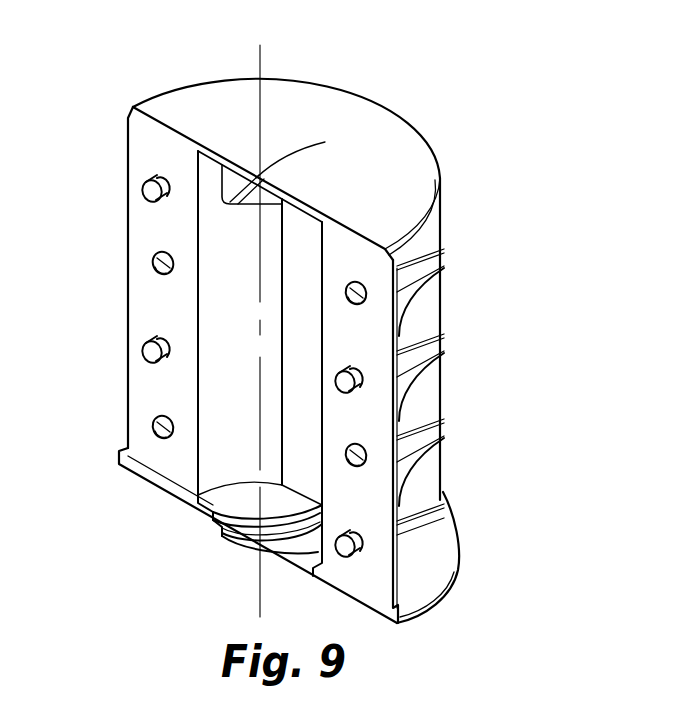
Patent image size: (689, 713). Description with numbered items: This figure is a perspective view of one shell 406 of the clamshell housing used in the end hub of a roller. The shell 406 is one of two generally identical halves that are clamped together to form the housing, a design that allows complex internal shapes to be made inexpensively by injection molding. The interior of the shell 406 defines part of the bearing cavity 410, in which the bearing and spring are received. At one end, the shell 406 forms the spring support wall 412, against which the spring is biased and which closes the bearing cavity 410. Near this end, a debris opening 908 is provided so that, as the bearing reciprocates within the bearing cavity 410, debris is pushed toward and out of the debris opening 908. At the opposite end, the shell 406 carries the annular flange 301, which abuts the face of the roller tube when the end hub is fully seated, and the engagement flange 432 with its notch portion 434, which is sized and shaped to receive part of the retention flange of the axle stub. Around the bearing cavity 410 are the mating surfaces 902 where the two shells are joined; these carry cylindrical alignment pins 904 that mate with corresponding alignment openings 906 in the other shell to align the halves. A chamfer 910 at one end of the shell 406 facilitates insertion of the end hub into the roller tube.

The annular flange 301 is at (443, 583).
The shell 406 is at (170, 97).
The bearing cavity 410 is at (245, 393).
The spring support wall 412 is at (224, 171).
The engagement flange 432 is at (283, 519).
The notch portion 434 is at (244, 510).
The mating surfaces 902 is at (363, 333).
The alignment pins 904 is at (150, 173).
The alignment openings 906 is at (152, 265).
The debris openings 908 is at (325, 142).
The chamfer 910 is at (438, 188).